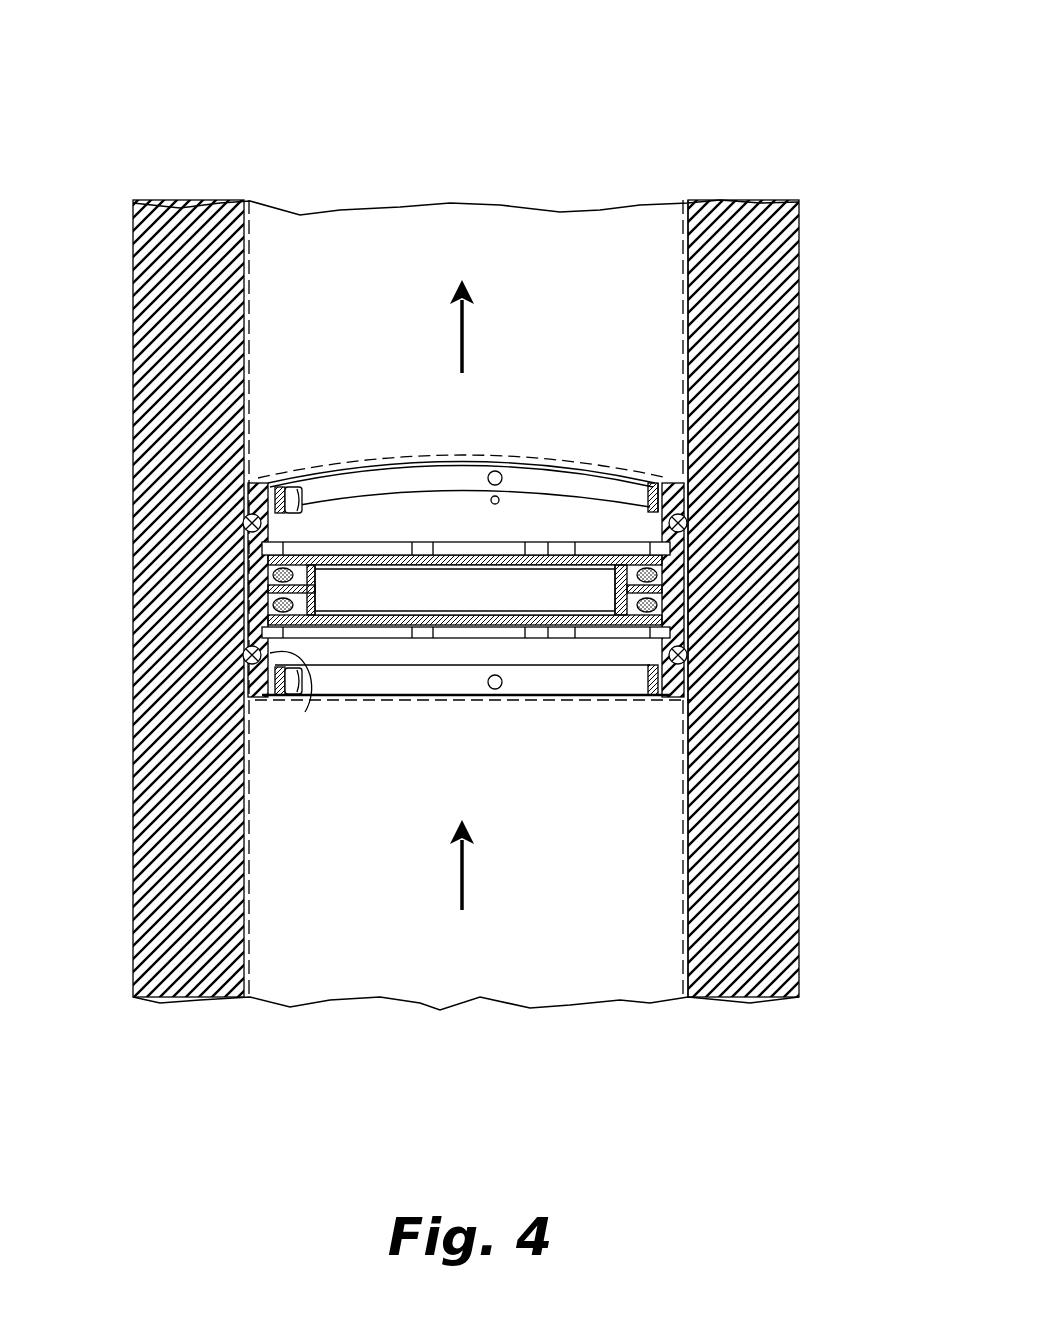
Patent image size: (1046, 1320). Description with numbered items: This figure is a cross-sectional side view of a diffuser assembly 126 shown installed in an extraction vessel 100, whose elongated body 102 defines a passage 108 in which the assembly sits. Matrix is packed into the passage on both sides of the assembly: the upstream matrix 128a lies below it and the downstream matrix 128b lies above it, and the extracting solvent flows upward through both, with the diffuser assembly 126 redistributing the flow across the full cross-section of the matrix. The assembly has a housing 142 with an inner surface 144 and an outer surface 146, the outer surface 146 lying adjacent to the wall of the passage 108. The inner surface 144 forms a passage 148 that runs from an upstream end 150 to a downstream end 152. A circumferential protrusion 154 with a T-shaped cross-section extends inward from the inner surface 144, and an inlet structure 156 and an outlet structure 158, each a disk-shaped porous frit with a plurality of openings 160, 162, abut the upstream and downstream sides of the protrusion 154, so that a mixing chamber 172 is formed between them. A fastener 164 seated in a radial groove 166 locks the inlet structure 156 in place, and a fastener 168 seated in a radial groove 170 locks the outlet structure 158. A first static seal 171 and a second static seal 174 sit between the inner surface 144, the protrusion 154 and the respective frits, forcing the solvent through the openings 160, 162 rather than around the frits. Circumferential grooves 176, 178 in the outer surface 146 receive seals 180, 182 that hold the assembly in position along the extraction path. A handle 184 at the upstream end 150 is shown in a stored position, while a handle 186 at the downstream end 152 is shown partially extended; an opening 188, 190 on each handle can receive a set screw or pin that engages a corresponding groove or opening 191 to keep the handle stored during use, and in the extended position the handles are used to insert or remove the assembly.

The extraction vessel 100 is at (500, 128).
The elongated body 102 is at (799, 263).
The passage 108 is at (688, 355).
The diffuser assembly 126 is at (692, 540).
The upstream matrix 128a is at (684, 780).
The downstream matrix 128b is at (684, 290).
The housing 142 is at (692, 612).
The inner surface 144 is at (306, 690).
The outer surface 146 is at (262, 630).
The passage 148 is at (354, 662).
The upstream end 150 is at (393, 702).
The downstream end 152 is at (402, 435).
The circumferential protrusion 154 is at (684, 584).
The inlet structure 156 is at (684, 642).
The outlet structure 158 is at (684, 560).
The openings 160 is at (603, 640).
The openings 162 is at (553, 555).
The fastener 164 is at (586, 626).
The radial groove 166 is at (246, 655).
The fastener 168 is at (335, 541).
The radial groove 170 is at (262, 545).
The first static seal 171 is at (273, 605).
The mixing chamber 172 is at (481, 600).
The second static seal 174 is at (273, 575).
The circumferential groove 176 is at (684, 668).
The circumferential groove 178 is at (684, 520).
The seal 180 is at (686, 656).
The seal 182 is at (246, 521).
The handle 184 is at (553, 640).
The handle 186 is at (540, 485).
The opening 188 is at (495, 690).
The opening 190 is at (496, 470).
The groove or opening 191 is at (491, 500).